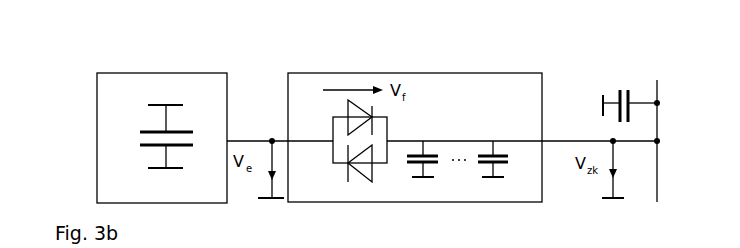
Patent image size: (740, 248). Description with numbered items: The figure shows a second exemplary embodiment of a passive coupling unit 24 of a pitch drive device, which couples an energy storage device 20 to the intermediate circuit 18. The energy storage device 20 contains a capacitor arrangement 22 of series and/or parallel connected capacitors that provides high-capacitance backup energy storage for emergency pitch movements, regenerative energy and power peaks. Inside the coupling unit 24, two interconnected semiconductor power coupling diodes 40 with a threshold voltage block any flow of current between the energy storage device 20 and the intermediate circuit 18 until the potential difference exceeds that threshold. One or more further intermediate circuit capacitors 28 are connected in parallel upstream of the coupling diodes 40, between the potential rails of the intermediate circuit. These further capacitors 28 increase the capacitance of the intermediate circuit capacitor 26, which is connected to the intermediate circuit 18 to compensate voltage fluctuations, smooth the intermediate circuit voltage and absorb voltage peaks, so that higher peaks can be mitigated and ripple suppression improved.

The intermediate circuit 18 is at (658, 152).
The energy storage device 20 is at (183, 73).
The capacitor arrangement 22 is at (149, 132).
The coupling unit 24 is at (345, 73).
The intermediate circuit capacitor 26 is at (624, 88).
The further intermediate circuit capacitors 28 is at (483, 167).
The coupling diodes 40 is at (348, 164).